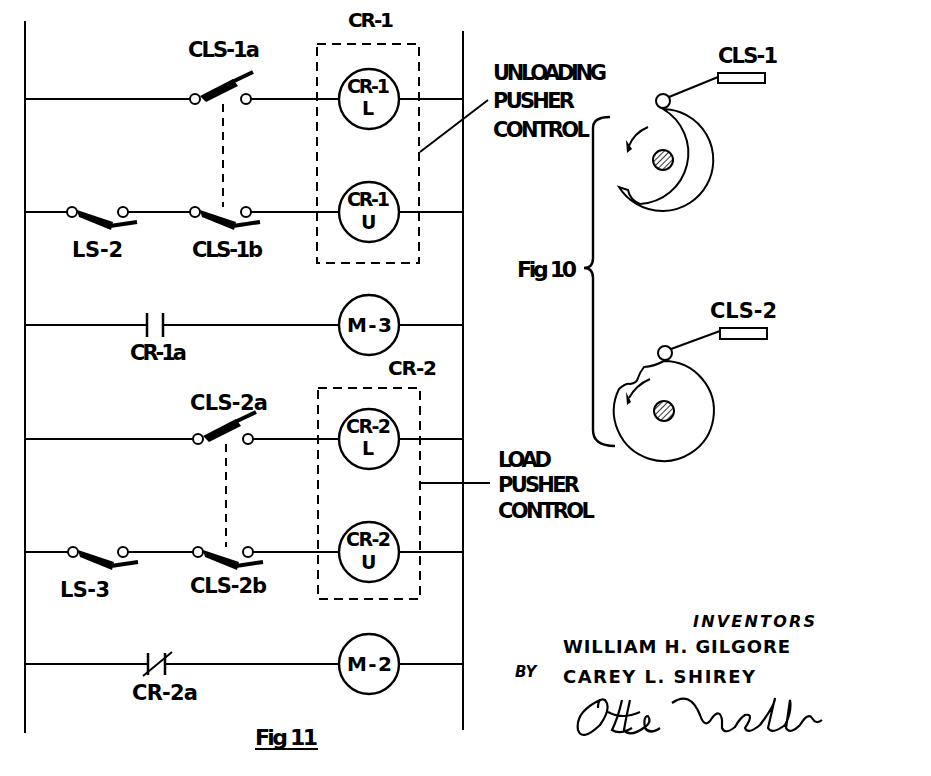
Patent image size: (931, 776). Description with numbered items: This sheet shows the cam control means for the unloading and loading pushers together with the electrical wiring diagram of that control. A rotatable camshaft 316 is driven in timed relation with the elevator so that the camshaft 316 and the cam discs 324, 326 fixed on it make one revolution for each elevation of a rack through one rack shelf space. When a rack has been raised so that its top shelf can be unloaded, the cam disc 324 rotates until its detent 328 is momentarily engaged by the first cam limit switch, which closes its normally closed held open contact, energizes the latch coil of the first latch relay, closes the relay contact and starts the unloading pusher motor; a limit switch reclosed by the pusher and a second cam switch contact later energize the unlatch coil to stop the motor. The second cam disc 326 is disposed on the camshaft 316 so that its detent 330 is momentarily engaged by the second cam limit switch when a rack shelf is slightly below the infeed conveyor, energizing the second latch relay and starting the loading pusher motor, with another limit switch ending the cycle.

The camshaft 316 is at (673, 157).
The cam disc 324 is at (713, 168).
The second cam disc 326 is at (712, 428).
The detent 328 is at (633, 197).
The detent 330 is at (637, 382).